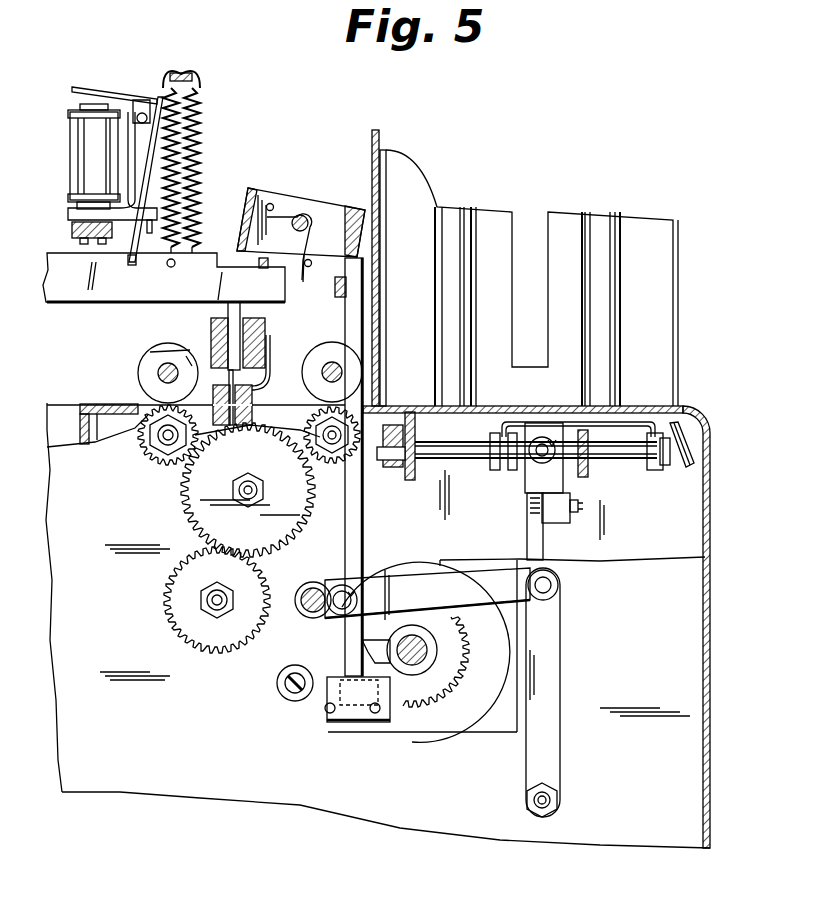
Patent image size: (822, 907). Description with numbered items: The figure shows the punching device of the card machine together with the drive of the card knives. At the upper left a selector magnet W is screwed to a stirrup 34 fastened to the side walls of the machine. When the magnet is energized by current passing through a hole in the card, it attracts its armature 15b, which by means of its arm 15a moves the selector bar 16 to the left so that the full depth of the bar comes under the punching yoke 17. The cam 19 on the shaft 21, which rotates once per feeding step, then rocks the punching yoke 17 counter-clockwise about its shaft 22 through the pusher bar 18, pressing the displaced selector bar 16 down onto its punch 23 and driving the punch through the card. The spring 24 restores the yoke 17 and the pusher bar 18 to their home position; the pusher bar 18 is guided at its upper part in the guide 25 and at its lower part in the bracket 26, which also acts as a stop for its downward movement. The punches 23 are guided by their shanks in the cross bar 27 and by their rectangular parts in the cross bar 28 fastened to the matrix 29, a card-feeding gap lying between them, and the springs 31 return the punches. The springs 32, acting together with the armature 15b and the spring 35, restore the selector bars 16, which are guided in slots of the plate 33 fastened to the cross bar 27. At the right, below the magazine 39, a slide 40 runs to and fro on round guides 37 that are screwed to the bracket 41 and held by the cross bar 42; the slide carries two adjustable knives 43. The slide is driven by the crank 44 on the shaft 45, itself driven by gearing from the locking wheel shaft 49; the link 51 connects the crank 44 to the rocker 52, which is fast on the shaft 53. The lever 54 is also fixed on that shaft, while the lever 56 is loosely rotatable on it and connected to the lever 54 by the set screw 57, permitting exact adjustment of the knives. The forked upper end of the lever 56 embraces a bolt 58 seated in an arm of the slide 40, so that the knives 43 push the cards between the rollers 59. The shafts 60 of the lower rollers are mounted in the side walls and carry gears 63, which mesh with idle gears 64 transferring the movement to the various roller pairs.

The selector bar 16 is at (67, 283).
The arm 15a is at (128, 263).
The armature 15b is at (127, 65).
The selector magnet W is at (92, 145).
The stirrup 34 is at (72, 228).
The spring 35 is at (159, 96).
The spring 32 is at (197, 67).
The plate 33 is at (258, 262).
The punching yoke 17 is at (313, 210).
The pusher bar 18 is at (353, 208).
The spring 24 is at (283, 213).
The shaft 22 is at (305, 234).
The guide 25 is at (380, 273).
The magazine 39 is at (568, 232).
The bracket 41 is at (410, 410).
The round guide 37 is at (618, 450).
The cross bar 42 is at (583, 442).
The slide 40 is at (650, 468).
The knife 43 is at (687, 410).
The bolt 58 is at (533, 460).
The lever 56 is at (530, 538).
The set screw 57 is at (568, 508).
The lever 54 is at (550, 552).
The link 51 is at (437, 590).
The shaft 45 is at (310, 612).
The crank 44 is at (298, 612).
The rocker 52 is at (550, 700).
The shaft 53 is at (560, 802).
The shaft 21 is at (415, 667).
The cam 19 is at (383, 653).
The bracket 26 is at (338, 712).
The locking wheel shaft 49 is at (208, 608).
The idle gear 64 is at (207, 493).
The gear 63 is at (145, 455).
The matrix 29 is at (220, 432).
The shaft 60 is at (165, 430).
The roller 59 is at (323, 420).
The punch 23 is at (232, 310).
The cross bar 27 is at (220, 340).
The cross bar 28 is at (222, 387).
The spring 31 is at (274, 370).